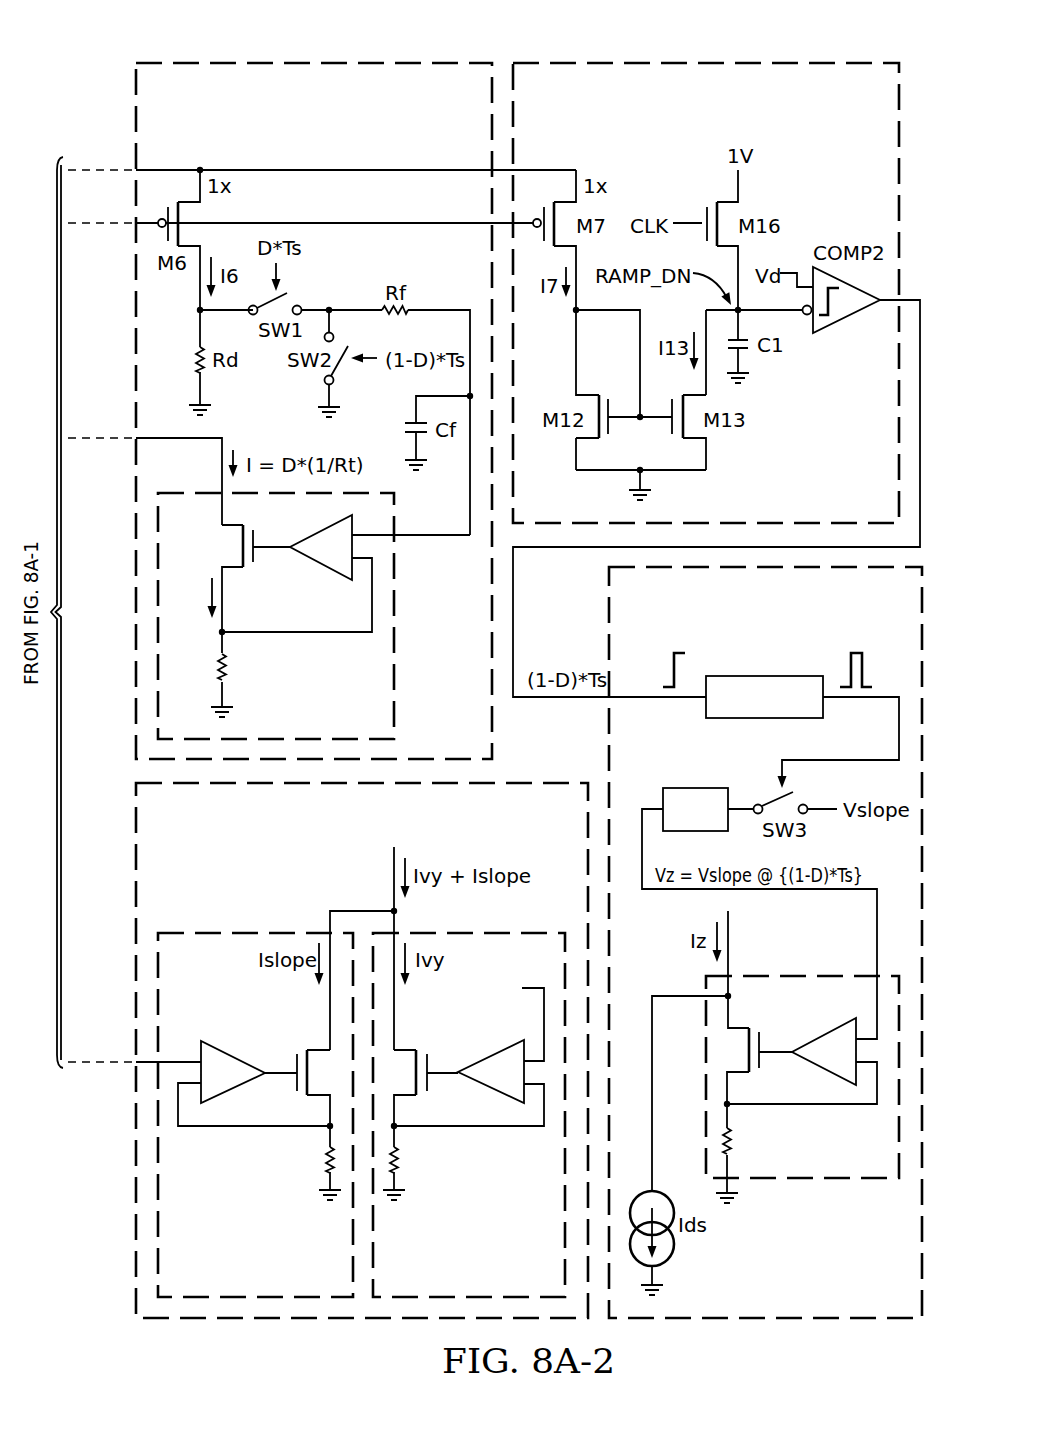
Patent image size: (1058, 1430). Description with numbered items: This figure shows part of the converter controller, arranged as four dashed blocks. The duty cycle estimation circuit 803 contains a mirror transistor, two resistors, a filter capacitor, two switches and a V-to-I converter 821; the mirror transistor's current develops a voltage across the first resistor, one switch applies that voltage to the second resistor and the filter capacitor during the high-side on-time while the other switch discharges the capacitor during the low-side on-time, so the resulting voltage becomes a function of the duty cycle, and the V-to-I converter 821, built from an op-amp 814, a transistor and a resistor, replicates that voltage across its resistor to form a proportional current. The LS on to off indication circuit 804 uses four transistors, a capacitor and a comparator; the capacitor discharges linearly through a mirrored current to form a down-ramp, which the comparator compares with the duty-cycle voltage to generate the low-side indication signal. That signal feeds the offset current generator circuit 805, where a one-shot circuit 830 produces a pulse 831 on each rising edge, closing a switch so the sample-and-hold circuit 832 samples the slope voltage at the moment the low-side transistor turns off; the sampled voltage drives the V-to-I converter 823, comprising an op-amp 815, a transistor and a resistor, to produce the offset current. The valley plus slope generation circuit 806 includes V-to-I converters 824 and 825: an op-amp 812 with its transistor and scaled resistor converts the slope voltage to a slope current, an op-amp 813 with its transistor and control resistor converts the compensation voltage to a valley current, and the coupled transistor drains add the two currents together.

The duty cycle estimation circuit 803 is at (258, 58).
The LS on to off indication circuit 804 is at (725, 58).
The offset current generator circuit 805 is at (602, 630).
The valley plus slope generation circuit 806 is at (350, 857).
The op-amp 812 is at (255, 1037).
The op-amp 813 is at (492, 1055).
The op-amp 814 is at (318, 567).
The op-amp 815 is at (828, 1033).
The V-to-I converter 821 is at (403, 690).
The V-to-I converter 823 is at (820, 1190).
The V-to-I converter 824 is at (275, 1277).
The V-to-I converter 825 is at (501, 1277).
The one-shot circuit 830 is at (755, 720).
The pulse 831 is at (857, 698).
The sample-and-hold circuit 832 is at (695, 788).